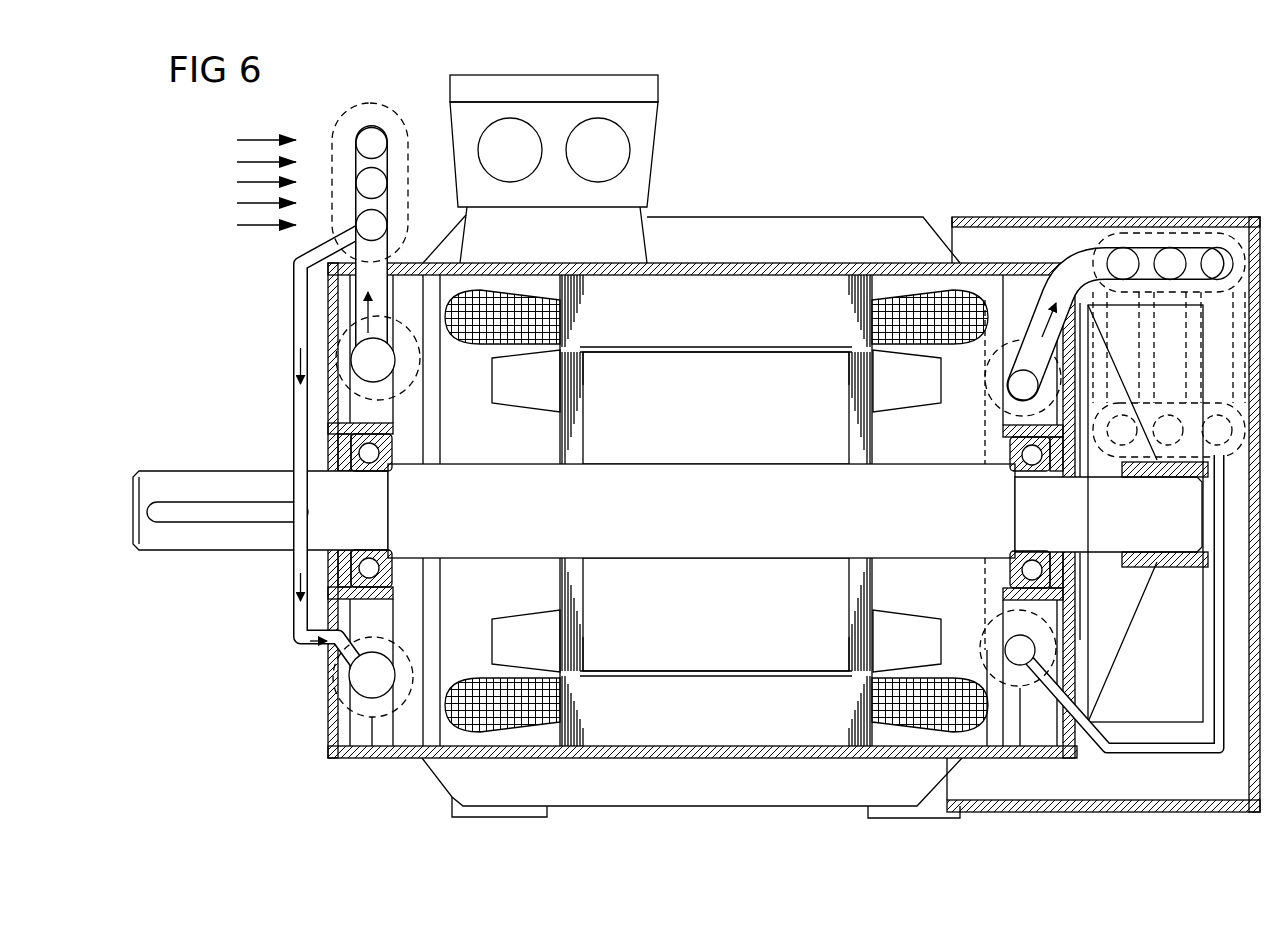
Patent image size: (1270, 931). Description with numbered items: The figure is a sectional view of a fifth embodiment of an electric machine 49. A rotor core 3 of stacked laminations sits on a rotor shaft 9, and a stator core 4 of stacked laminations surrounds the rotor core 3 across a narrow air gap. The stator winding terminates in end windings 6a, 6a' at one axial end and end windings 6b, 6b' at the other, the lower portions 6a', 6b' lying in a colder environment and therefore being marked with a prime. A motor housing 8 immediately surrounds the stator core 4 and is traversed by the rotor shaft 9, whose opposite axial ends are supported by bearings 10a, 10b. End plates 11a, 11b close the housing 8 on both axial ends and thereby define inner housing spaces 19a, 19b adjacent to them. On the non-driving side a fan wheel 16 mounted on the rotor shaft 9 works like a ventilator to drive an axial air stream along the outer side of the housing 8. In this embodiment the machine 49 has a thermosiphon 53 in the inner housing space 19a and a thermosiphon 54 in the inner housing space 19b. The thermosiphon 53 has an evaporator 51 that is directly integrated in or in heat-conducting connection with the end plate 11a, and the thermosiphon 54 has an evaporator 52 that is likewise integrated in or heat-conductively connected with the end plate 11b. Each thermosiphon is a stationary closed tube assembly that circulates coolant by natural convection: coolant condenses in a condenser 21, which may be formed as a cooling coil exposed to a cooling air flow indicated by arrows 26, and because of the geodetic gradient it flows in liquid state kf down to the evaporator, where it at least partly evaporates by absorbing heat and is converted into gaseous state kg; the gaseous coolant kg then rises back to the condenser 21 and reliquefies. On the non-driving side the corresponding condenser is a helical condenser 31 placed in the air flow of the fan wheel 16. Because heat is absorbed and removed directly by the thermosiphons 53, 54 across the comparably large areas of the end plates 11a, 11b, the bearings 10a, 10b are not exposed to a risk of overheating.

The rotor core 3 is at (758, 290).
The stator core 4 is at (727, 453).
The end winding 6a is at (502, 283).
The end winding 6a' is at (502, 677).
The end winding 6b is at (930, 282).
The end winding 6b' is at (930, 739).
The motor housing 8 is at (703, 272).
The rotor shaft 9 is at (737, 547).
The bearing 10a is at (365, 475).
The bearing 10b is at (1036, 560).
The end plate 11a is at (340, 388).
The end plate 11b is at (1068, 608).
The fan wheel 16 is at (1132, 630).
The inner housing space 19a is at (510, 572).
The inner housing space 19b is at (900, 573).
The condenser 21 is at (388, 163).
The cooling air flow 26 is at (237, 173).
The helical condenser 31 is at (1195, 256).
The electric machine 49 is at (696, 441).
The evaporator 51 is at (383, 355).
The evaporator 52 is at (1013, 376).
The thermosiphon 53 is at (414, 623).
The thermosiphon 54 is at (992, 632).
The liquid coolant kf is at (300, 356).
The gaseous coolant kg is at (368, 312).